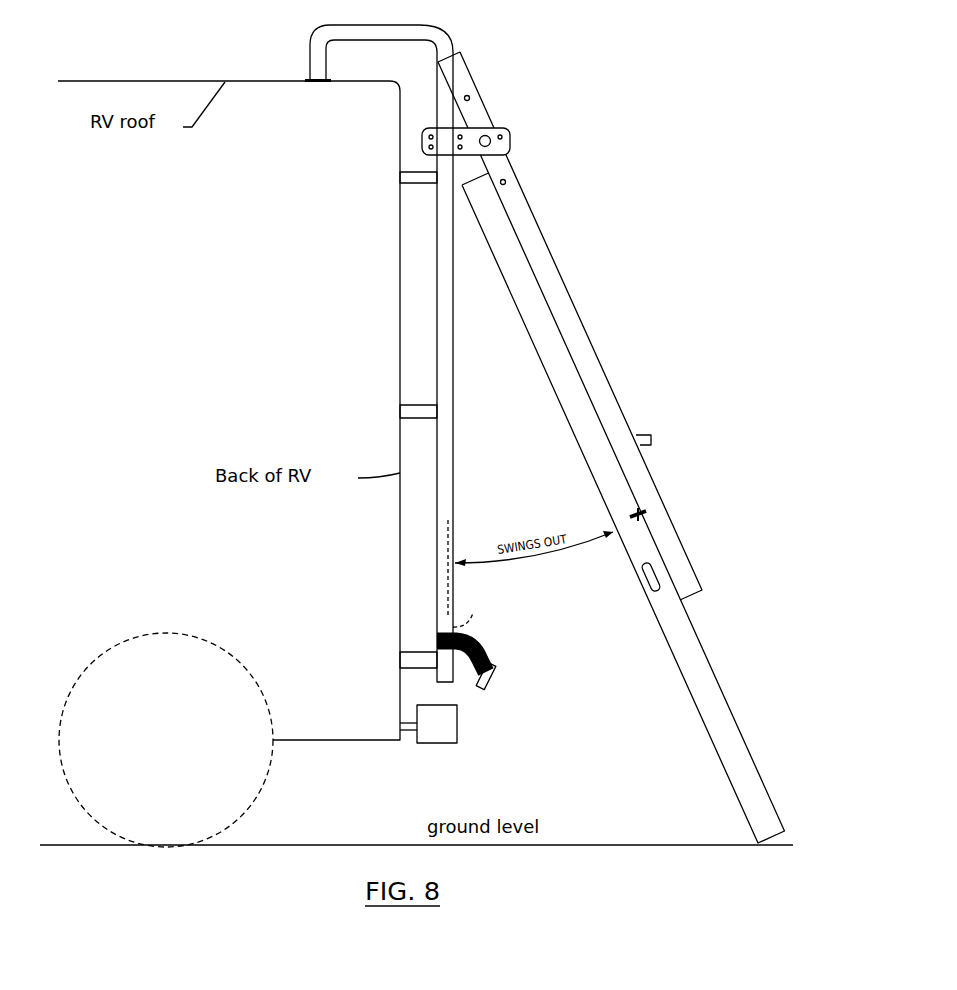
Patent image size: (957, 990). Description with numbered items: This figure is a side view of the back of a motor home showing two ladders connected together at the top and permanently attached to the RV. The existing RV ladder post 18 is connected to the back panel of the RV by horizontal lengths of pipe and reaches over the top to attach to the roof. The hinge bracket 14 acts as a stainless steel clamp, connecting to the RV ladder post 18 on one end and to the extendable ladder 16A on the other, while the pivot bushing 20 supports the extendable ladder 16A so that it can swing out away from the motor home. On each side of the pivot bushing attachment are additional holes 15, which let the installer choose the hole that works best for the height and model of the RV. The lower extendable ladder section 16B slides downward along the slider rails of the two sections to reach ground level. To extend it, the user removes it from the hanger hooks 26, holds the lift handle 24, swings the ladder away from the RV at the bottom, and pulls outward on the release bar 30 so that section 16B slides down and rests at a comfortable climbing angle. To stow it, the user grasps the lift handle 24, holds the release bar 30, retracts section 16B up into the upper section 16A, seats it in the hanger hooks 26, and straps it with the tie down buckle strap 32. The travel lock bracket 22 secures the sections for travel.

The hinge bracket 14 is at (491, 128).
The pivot bushing 20 is at (492, 136).
The holes 15 is at (505, 181).
The extendable ladder 16A is at (699, 583).
The extendable ladder section 16B is at (712, 672).
The RV ladder post 18 is at (437, 357).
The release bar 30 is at (652, 437).
The travel lock bracket 22 is at (648, 514).
The lift handle 24 is at (646, 582).
The hanger hooks 26 is at (450, 615).
The tie down buckle strap 32 is at (490, 686).